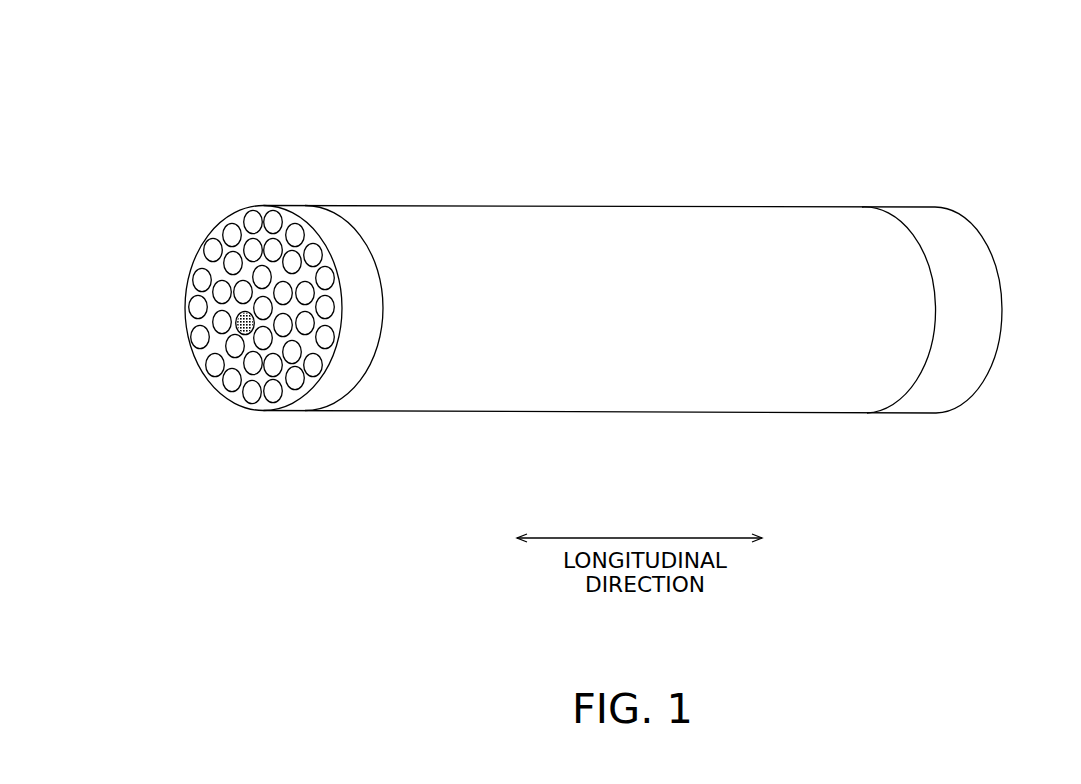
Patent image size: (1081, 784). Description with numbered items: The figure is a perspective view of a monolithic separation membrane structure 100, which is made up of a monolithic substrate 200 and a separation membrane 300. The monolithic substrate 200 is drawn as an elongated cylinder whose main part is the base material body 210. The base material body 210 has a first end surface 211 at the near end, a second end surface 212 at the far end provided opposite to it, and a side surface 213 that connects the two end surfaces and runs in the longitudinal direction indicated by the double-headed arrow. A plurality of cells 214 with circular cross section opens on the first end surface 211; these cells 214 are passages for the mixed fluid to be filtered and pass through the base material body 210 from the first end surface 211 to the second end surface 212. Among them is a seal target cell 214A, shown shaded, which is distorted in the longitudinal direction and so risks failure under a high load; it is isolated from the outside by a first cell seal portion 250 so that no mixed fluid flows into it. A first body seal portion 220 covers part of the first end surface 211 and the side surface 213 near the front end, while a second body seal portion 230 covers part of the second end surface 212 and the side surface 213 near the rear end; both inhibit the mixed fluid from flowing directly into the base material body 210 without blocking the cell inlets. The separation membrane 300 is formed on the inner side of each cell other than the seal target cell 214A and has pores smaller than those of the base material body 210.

The monolithic separation membrane structure 100 is at (375, 118).
The monolithic substrate 200 is at (605, 200).
The base material body 210 is at (847, 398).
The first end surface 211 is at (222, 275).
The second end surface 212 is at (1008, 282).
The side surface 213 is at (713, 230).
The cells 214 is at (252, 218).
The seal target cell 214A is at (243, 323).
The first body seal portion 220 is at (310, 395).
The second body seal portion 230 is at (927, 400).
The first cell seal portion 250 is at (237, 322).
The separation membrane 300 is at (253, 400).